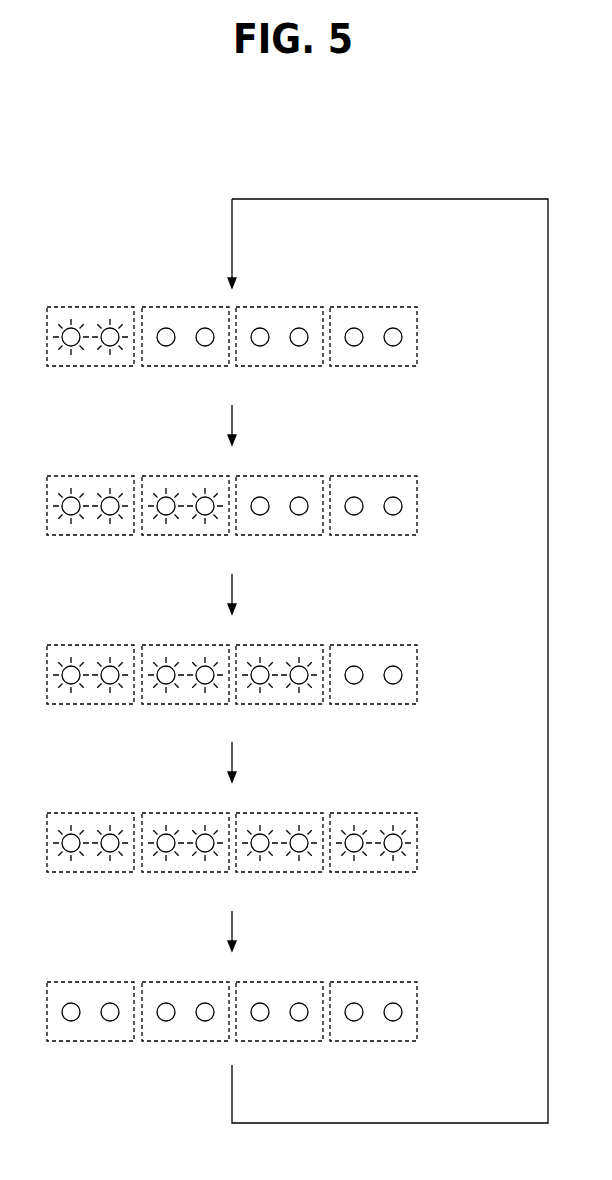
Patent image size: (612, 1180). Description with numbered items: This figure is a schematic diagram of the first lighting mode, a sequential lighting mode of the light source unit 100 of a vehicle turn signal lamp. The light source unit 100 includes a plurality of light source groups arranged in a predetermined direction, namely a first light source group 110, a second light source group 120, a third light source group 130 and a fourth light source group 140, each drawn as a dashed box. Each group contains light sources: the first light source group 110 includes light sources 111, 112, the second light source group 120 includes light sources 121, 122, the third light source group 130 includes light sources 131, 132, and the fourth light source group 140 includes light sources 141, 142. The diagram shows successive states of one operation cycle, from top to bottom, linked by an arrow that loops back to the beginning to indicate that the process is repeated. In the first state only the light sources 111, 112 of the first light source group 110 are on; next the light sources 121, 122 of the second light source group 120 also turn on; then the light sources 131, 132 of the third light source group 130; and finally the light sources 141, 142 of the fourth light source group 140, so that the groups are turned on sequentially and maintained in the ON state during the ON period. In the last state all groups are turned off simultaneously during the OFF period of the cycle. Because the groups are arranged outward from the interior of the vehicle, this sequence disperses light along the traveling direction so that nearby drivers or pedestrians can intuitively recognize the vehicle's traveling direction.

The light source unit 100 is at (402, 263).
The first light source group 110 is at (97, 307).
The second light source group 120 is at (192, 307).
The third light source group 130 is at (286, 307).
The fourth light source group 140 is at (380, 307).
The light source 111 is at (71, 346).
The light source 112 is at (110, 346).
The light source 121 is at (166, 346).
The light source 122 is at (205, 346).
The light source 131 is at (260, 346).
The light source 132 is at (299, 346).
The light source 141 is at (354, 346).
The light source 142 is at (393, 346).